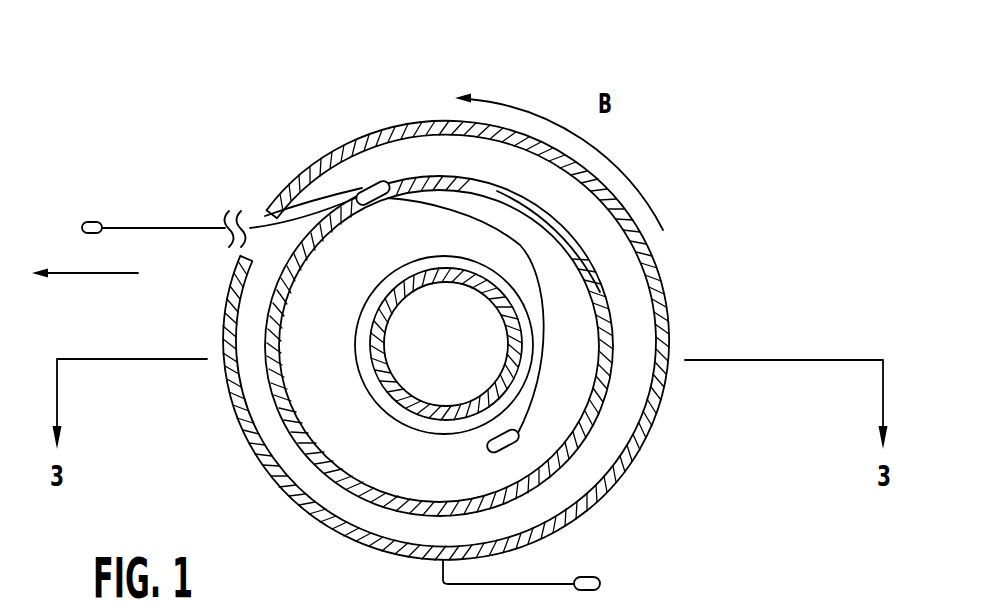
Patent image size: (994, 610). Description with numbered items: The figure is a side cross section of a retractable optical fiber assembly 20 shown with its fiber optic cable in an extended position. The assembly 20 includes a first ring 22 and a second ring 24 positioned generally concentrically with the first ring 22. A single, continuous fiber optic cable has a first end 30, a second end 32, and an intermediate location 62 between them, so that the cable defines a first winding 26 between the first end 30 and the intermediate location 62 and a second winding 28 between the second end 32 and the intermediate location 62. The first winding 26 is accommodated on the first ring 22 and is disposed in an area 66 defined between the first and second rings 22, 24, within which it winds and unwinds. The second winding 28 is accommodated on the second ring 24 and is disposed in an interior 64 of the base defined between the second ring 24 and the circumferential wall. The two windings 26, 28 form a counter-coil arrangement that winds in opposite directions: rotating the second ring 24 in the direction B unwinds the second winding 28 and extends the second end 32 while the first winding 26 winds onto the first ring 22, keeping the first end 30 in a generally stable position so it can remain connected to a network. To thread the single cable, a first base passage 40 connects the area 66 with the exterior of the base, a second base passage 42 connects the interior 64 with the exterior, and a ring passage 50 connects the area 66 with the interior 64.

The retractable optical fiber assembly 20 is at (229, 62).
The first ring 22 is at (412, 395).
The second ring 24 is at (615, 295).
The first winding 26 is at (540, 287).
The second winding 28 is at (302, 214).
The first end 30 is at (607, 565).
The second end 32 is at (97, 221).
The first base passage 40 is at (466, 443).
The second base passage 42 is at (257, 197).
The ring passage 50 is at (390, 220).
The intermediate location 62 is at (376, 186).
The interior 64 is at (634, 400).
The area 66 is at (304, 408).